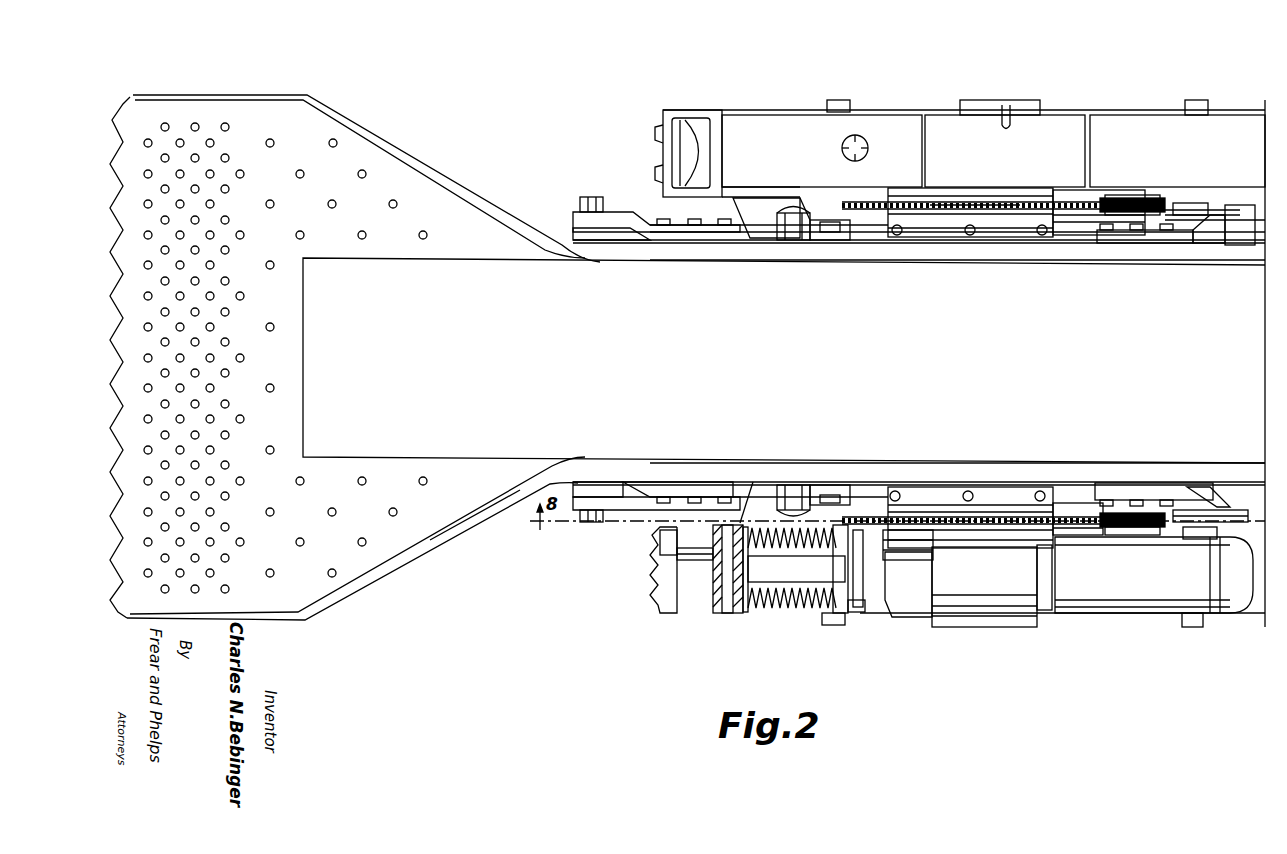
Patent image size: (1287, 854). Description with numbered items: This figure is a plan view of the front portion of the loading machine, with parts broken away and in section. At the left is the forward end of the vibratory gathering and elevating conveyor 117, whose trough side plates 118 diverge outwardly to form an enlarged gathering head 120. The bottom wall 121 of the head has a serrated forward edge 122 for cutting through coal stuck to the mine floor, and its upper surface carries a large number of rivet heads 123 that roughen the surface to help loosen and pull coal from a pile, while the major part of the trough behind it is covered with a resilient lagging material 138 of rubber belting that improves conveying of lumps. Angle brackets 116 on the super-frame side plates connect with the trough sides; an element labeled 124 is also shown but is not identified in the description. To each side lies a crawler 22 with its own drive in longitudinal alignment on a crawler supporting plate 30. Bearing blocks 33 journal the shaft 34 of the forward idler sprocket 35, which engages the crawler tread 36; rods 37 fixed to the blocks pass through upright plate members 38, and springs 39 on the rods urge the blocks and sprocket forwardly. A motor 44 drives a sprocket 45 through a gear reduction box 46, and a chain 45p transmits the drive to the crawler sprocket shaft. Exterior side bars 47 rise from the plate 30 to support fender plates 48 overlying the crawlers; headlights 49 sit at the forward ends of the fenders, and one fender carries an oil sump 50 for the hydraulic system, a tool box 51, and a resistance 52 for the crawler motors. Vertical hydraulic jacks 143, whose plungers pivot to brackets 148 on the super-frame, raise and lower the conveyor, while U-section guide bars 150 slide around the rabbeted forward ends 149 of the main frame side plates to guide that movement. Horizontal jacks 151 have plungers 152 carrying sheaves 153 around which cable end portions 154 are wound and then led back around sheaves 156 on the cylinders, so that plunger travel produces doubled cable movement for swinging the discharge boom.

The crawler 22 is at (655, 573).
The crawler supporting plate 30 is at (762, 235).
The bearing block 33 is at (747, 612).
The shaft 34 is at (725, 613).
The forward idler sprocket 35 is at (700, 585).
The crawler tread 36 is at (673, 538).
The rod 37 is at (850, 530).
The upright plate member 38 is at (855, 613).
The spring 39 is at (805, 548).
The motor 44 is at (992, 586).
The sprocket 45 is at (1190, 203).
The chain 45p is at (1185, 228).
The gear reduction box 46 is at (1154, 575).
The exterior side bar 47 is at (838, 100).
The fender plate 48 is at (710, 116).
The headlight 49 is at (692, 132).
The oil sump 50 is at (765, 115).
The tool box 51 is at (963, 115).
The resistance 52 is at (1123, 120).
The angle bracket 116 is at (628, 212).
The vibratory gathering and elevating conveyor 117 is at (492, 543).
The side plate 118 is at (898, 262).
The gathering head 120 is at (366, 588).
The bottom wall 121 is at (340, 160).
The serrated forward edge 122 is at (128, 100).
The rivet heads 123 is at (296, 174).
The bracket plate 124 is at (627, 238).
The resilient lagging material 138 is at (784, 360).
The hydraulic jack 143 is at (800, 212).
The bracket 148 is at (800, 233).
The forward end of main frame side plate 149 is at (848, 235).
The guide bar 150 is at (838, 240).
The horizontal jack 151 is at (940, 205).
The plunger 152 is at (1068, 198).
The sheave 153 is at (1140, 198).
The cable end portion 154 is at (990, 200).
The sheave 156 is at (848, 202).